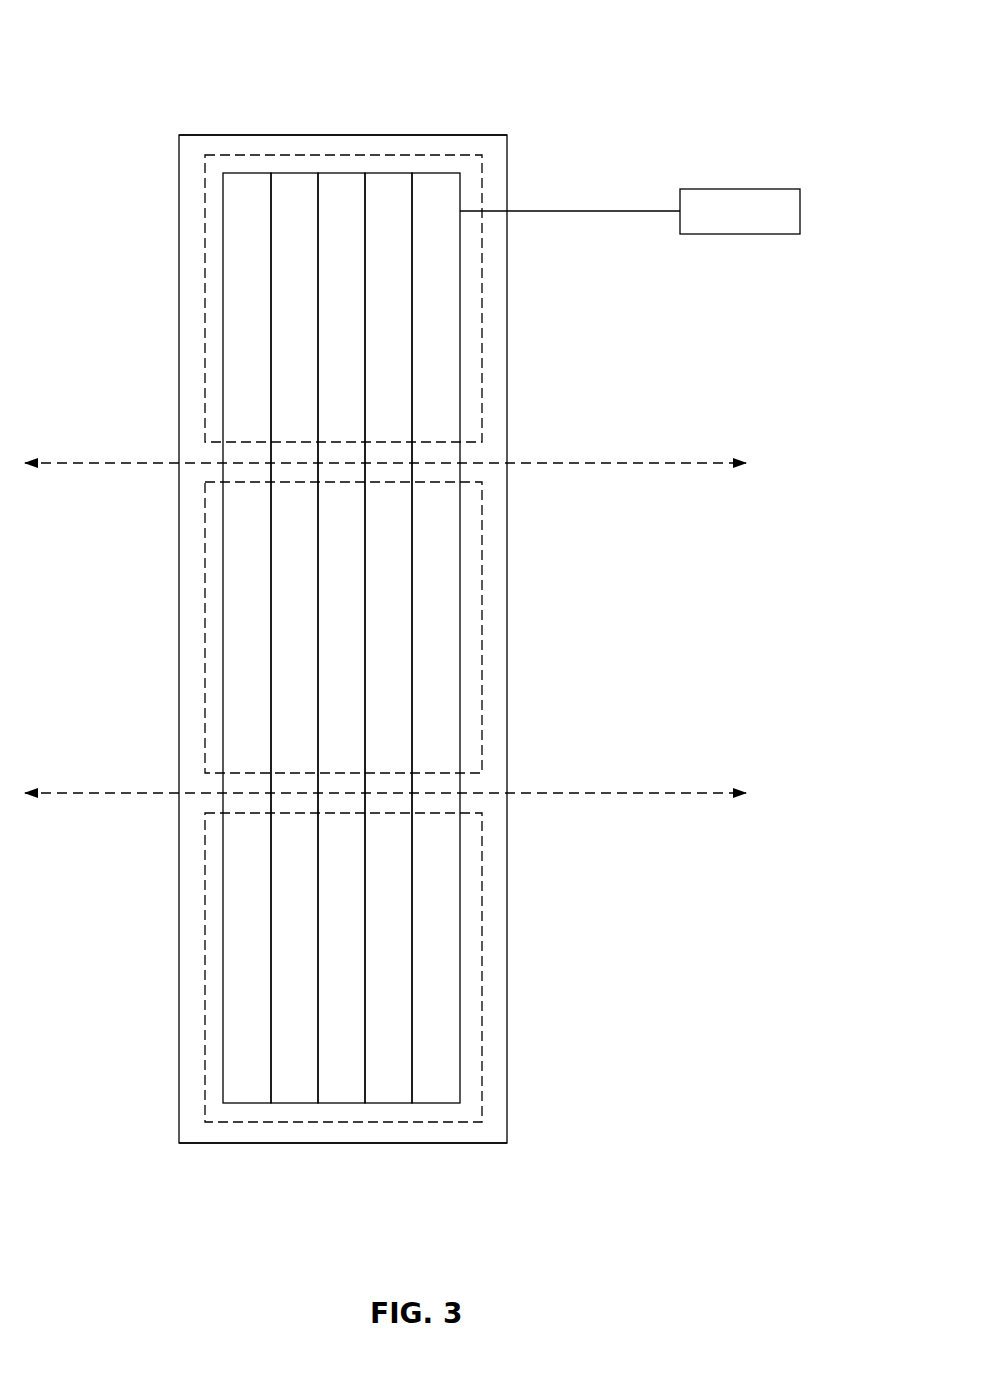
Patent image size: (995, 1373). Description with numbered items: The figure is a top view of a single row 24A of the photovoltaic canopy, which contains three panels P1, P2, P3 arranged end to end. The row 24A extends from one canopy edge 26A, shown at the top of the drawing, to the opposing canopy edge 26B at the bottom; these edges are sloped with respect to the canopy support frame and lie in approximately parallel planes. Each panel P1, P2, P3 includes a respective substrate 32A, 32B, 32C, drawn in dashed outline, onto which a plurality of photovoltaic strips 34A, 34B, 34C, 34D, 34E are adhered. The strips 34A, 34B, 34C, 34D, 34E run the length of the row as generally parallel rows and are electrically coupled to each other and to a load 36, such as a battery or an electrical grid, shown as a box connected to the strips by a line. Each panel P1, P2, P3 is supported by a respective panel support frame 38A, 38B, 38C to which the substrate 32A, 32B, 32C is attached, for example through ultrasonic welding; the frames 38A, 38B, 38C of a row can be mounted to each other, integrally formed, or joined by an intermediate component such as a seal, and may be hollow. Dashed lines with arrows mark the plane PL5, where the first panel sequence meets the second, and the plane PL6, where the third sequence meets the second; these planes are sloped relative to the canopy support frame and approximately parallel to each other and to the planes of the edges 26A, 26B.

The row 24A is at (575, 55).
The edge 26A is at (257, 128).
The edge 26B is at (334, 1153).
The substrate 32A is at (472, 279).
The substrate 32B is at (472, 631).
The substrate 32C is at (472, 928).
The photovoltaic strip 34A is at (445, 1068).
The photovoltaic strip 34B is at (398, 1090).
The photovoltaic strip 34C is at (345, 1090).
The photovoltaic strip 34D is at (298, 1090).
The photovoltaic strip 34E is at (244, 1090).
The load 36 is at (736, 189).
The panel support frame 38A is at (492, 324).
The panel support frame 38B is at (492, 675).
The panel support frame 38C is at (492, 972).
The panel P1 is at (144, 326).
The panel P2 is at (144, 631).
The panel P3 is at (144, 987).
The plane PL5 is at (678, 462).
The plane PL6 is at (678, 792).